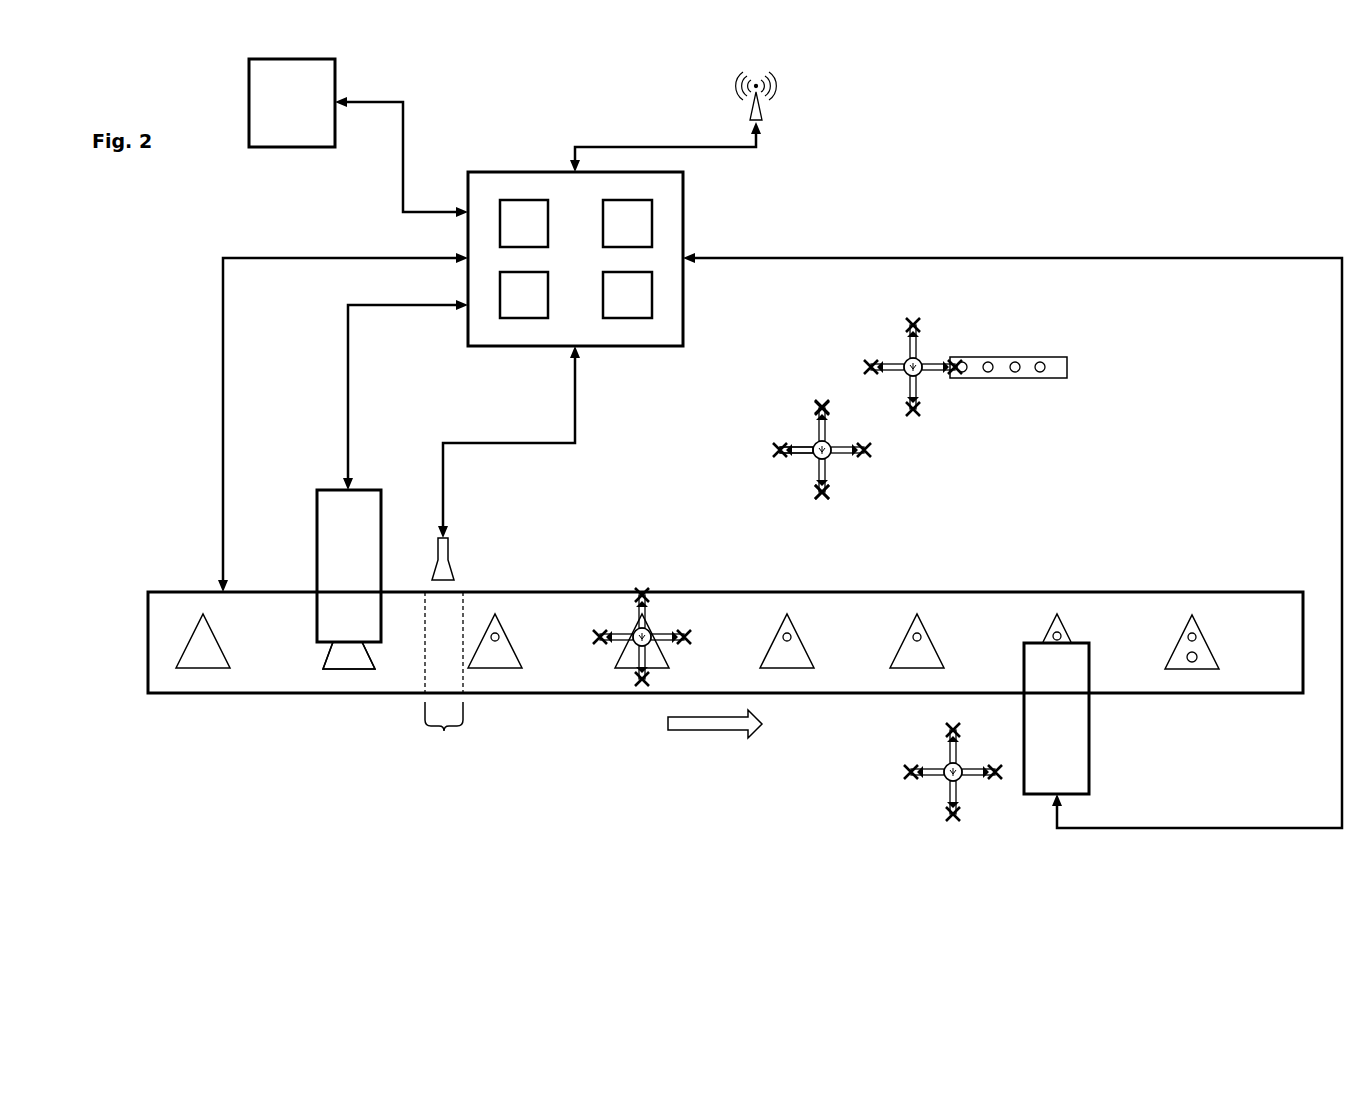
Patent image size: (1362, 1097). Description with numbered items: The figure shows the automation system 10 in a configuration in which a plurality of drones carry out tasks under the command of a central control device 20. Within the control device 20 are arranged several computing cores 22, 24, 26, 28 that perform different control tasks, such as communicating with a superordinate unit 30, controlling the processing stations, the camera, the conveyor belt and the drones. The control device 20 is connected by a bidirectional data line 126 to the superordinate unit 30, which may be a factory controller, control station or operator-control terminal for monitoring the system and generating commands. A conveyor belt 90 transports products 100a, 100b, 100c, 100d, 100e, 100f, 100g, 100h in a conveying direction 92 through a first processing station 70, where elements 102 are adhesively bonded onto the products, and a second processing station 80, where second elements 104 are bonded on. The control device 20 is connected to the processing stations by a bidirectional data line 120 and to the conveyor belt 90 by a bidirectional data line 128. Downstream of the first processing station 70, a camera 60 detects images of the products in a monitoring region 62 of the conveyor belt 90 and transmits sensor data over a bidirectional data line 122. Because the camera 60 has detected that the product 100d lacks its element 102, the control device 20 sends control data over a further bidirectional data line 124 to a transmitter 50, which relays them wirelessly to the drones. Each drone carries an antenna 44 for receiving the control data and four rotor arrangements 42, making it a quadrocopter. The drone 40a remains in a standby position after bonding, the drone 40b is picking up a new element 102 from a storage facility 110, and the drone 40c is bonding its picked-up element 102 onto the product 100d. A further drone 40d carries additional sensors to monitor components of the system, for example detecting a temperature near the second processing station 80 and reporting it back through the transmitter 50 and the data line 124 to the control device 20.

The automation system 10 is at (984, 171).
The control device 20 is at (575, 259).
The core 22 is at (524, 223).
The core 24 is at (627, 223).
The core 26 is at (524, 295).
The core 28 is at (627, 295).
The superordinate unit 30 is at (292, 103).
The drone 40a is at (840, 451).
The drone 40b is at (906, 340).
The drone 40c is at (645, 625).
The drone 40d is at (945, 795).
The rotor arrangement 42 is at (852, 448).
The antenna 44 is at (805, 440).
The transmitter 50 is at (740, 96).
The camera 60 is at (455, 556).
The monitoring region 62 is at (444, 680).
The first processing station 70 is at (349, 579).
The second processing station 80 is at (1056, 718).
The conveyor belt 90 is at (213, 605).
The conveying direction 92 is at (705, 727).
The product 100a is at (200, 660).
The product 100b is at (347, 660).
The product 100c is at (500, 660).
The product 100d is at (642, 683).
The product 100e is at (787, 660).
The product 100f is at (917, 660).
The product 100g is at (1068, 633).
The product 100h is at (1192, 672).
The element 102 is at (496, 635).
The second element 104 is at (1195, 660).
The storage facility 110 is at (1067, 368).
The bidirectional data line 120 is at (348, 355).
The bidirectional data line 122 is at (575, 405).
The bidirectional data line 124 is at (622, 146).
The bidirectional data line 126 is at (405, 138).
The bidirectional data line 128 is at (222, 334).